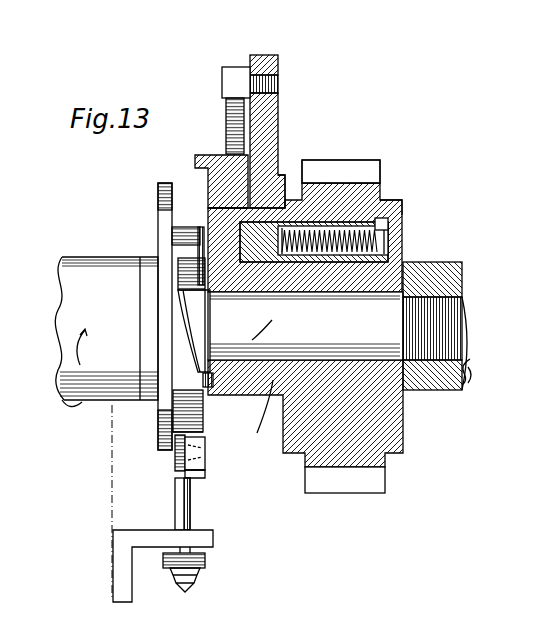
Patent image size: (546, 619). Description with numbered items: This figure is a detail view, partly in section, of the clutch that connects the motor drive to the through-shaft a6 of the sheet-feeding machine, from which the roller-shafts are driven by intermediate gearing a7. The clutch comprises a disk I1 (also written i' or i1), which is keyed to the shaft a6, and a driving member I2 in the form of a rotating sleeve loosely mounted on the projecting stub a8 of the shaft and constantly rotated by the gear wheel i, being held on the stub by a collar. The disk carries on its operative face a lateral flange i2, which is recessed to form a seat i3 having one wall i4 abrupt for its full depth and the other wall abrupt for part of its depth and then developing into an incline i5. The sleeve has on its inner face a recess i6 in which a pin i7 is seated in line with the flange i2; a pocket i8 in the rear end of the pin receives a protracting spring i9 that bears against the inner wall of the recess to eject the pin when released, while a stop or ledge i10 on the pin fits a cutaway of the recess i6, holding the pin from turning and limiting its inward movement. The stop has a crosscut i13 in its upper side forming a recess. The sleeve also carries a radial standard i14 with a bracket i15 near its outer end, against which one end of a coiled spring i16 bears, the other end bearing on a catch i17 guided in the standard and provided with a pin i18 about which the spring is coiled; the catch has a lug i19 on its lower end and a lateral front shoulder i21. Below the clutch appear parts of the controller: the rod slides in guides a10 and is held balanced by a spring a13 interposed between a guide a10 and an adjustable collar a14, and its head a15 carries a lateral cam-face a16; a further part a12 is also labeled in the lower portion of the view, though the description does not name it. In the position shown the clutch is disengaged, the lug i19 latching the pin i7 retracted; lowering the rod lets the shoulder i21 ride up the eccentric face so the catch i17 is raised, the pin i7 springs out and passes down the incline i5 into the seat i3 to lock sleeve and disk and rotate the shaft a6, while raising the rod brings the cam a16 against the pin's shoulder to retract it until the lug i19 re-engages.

The gear wheel i is at (305, 356).
The disk i' is at (352, 157).
The disk i1 is at (352, 157).
The lateral flange i2 is at (205, 418).
The seat i3 is at (180, 277).
The abrupt wall i4 is at (198, 230).
The incline i5 is at (250, 337).
The recess i6 is at (386, 222).
The pin i7 is at (281, 185).
The pocket i8 is at (385, 200).
The protracting spring i9 is at (388, 243).
The stop i10 is at (323, 200).
The crosscut i13 is at (240, 265).
The radial standard i14 is at (278, 113).
The bracket i15 is at (240, 66).
The coiled spring i16 is at (226, 100).
The catch i17 is at (215, 192).
The pin i18 is at (228, 128).
The lug i19 is at (173, 238).
The lateral front shoulder i21 is at (195, 160).
The disk I1 is at (158, 211).
The driving member I2 is at (264, 425).
The through-shaft a6 is at (305, 326).
The intermediate gearing a7 is at (205, 485).
The stub a8 is at (455, 319).
The guides a10 is at (150, 545).
The rod a12 is at (183, 478).
The spring a13 is at (200, 585).
The adjustable collar a14 is at (205, 562).
The head a15 is at (205, 462).
The lateral cam-face a16 is at (218, 446).